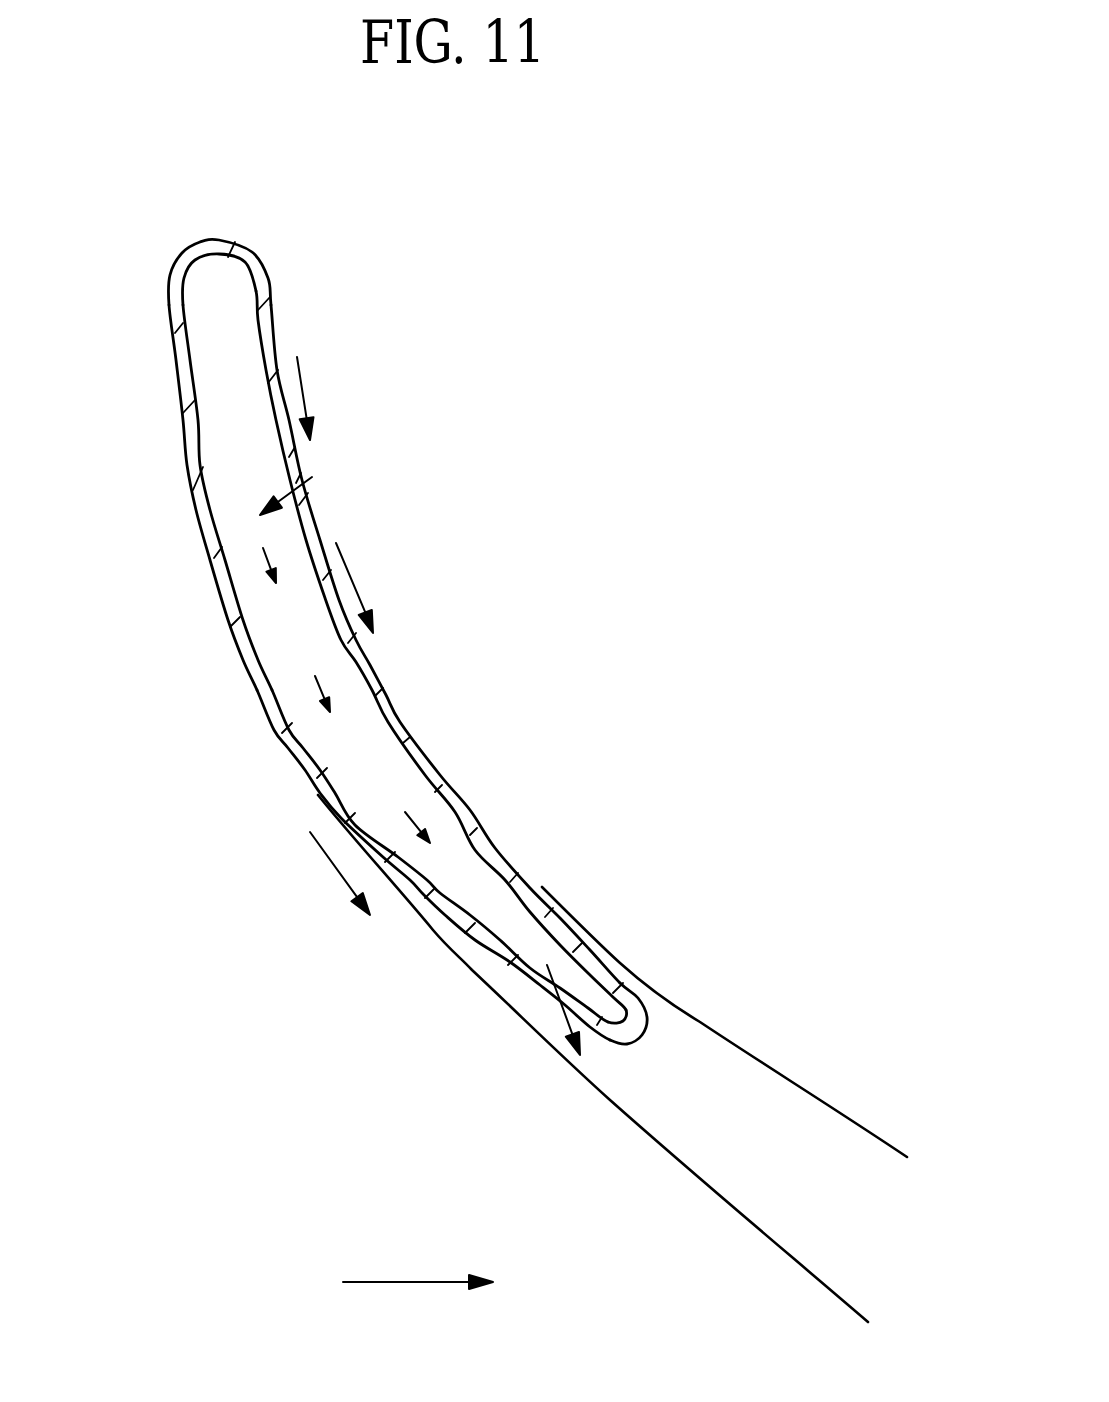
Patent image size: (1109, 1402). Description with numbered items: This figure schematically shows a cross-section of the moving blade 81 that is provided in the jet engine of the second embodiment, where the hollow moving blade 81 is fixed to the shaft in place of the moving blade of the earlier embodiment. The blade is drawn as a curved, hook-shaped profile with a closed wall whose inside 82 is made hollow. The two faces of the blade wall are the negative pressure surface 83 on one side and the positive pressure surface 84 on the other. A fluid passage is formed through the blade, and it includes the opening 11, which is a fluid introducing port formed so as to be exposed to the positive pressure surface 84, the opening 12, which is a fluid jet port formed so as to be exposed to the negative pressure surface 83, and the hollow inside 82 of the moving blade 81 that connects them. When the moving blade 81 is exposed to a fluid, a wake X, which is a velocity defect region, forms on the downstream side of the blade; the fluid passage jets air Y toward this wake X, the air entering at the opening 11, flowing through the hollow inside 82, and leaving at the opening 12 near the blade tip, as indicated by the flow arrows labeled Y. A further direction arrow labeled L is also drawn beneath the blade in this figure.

The moving blade 81 is at (405, 240).
The inside of the moving blade 82 is at (218, 463).
The negative pressure surface 83 is at (258, 672).
The positive pressure surface 84 is at (400, 722).
The opening 11 is at (305, 472).
The opening 12 is at (556, 1005).
The wake X is at (767, 1097).
The air Y is at (310, 478).
The longitudinal direction L is at (434, 1283).